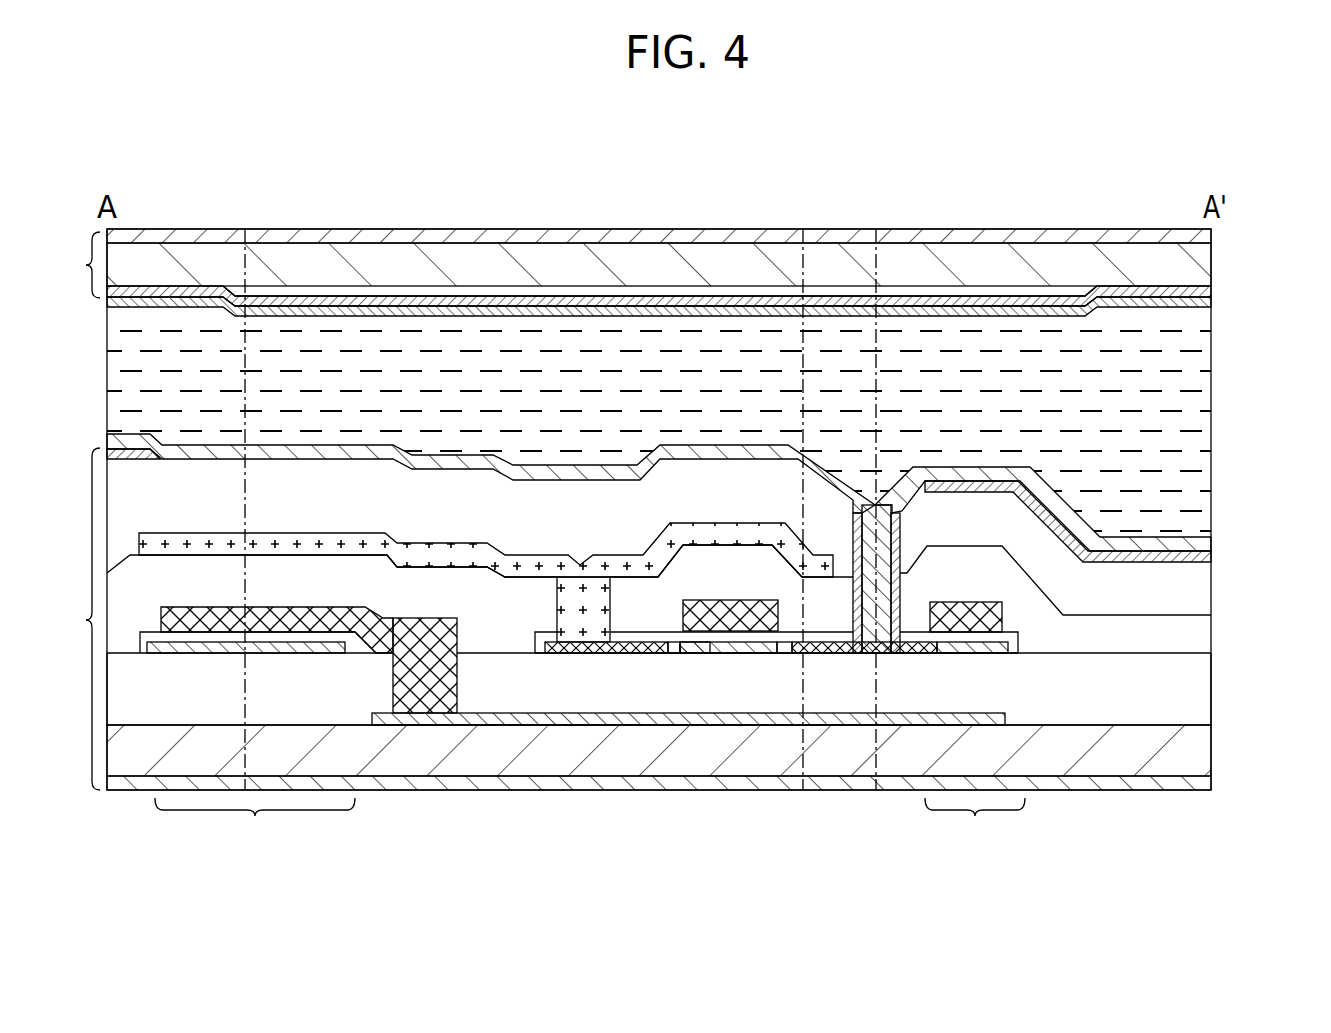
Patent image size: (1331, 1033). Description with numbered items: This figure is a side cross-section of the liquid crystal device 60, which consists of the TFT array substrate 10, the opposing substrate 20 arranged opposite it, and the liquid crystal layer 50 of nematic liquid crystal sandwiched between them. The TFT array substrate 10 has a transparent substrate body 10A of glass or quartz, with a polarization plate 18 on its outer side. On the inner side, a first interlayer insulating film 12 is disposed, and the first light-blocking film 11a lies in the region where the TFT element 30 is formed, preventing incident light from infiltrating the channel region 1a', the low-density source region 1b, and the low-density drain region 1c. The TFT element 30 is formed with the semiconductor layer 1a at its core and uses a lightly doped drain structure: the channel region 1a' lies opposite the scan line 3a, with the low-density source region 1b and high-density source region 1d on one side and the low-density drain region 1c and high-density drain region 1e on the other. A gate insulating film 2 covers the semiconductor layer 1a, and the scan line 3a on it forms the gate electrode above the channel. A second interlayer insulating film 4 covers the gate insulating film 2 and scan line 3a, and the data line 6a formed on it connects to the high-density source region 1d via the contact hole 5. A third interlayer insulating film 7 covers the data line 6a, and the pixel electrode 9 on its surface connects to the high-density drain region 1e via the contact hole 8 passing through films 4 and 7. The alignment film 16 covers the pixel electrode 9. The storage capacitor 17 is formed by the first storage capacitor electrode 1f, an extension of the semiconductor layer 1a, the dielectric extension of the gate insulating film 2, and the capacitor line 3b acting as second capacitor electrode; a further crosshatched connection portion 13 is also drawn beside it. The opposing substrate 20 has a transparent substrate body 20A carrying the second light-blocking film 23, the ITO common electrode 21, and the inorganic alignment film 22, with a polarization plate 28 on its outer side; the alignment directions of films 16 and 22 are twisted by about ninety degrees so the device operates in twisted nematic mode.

The liquid crystal device 60 is at (185, 172).
The opposing substrate 20 is at (72, 265).
The polarization plate 28 is at (1213, 238).
The substrate body 20A is at (1205, 262).
The second light-blocking film 23 is at (412, 292).
The common electrode 21 is at (1213, 292).
The alignment film 22 is at (1213, 302).
The liquid crystal layer 50 is at (1195, 413).
The TFT array substrate 10 is at (72, 619).
The alignment film 16 is at (1213, 522).
The pixel electrode 9 is at (1213, 557).
The contact hole 8 is at (877, 525).
The third interlayer insulating film 7 is at (1195, 587).
The data line 6a is at (420, 543).
The contact hole 5 is at (593, 600).
The capacitor line 3b is at (265, 612).
The scan line 3a is at (713, 605).
The connection portion 13 is at (438, 703).
The gate insulating film 2 is at (1018, 644).
The first storage capacitor electrode 1f is at (288, 643).
The high-density source region 1d is at (572, 645).
The low-density source region 1b is at (673, 655).
The channel region 1a' is at (716, 675).
The semiconductor layer 1a is at (712, 747).
The low-density drain region 1c is at (786, 655).
The high-density drain region 1e is at (892, 656).
The second interlayer insulating film 4 is at (1195, 636).
The first interlayer insulating film 12 is at (1213, 685).
The first light-blocking film 11a is at (820, 726).
The TFT element 30 is at (720, 716).
The substrate body 10A is at (1213, 750).
The polarization plate 18 is at (1213, 783).
The storage capacitor 17 is at (590, 830).